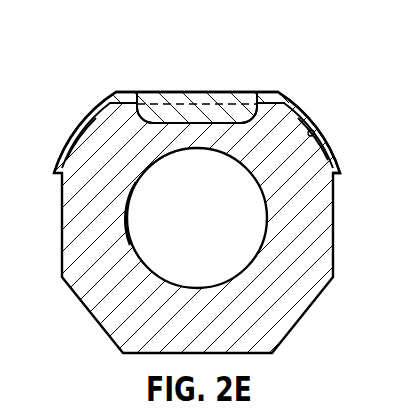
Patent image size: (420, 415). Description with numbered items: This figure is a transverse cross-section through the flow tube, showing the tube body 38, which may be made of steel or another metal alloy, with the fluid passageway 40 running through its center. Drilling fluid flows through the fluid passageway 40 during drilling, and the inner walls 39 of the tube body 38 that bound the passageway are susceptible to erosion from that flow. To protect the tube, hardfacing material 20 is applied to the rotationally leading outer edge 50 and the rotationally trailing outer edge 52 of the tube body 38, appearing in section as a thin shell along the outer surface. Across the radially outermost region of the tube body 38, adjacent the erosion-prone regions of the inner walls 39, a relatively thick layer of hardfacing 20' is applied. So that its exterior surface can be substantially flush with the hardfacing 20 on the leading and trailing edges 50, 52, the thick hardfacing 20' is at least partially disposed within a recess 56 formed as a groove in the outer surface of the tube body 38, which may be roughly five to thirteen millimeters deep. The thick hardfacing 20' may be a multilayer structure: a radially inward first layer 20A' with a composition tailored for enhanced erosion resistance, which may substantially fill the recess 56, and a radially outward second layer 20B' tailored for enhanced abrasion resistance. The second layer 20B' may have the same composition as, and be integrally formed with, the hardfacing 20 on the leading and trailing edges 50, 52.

The hardfacing material 20 is at (197, 113).
The relatively thick layer of hardfacing 20' is at (197, 67).
The radially inward first layer 20A' is at (241, 84).
The radially outward second layer 20B' is at (162, 87).
The recess 56 is at (215, 104).
The rotationally leading outer edge 50 is at (73, 134).
The rotationally trailing outer edge 52 is at (313, 135).
The tube body 38 is at (310, 237).
The inner walls 39 is at (143, 243).
The fluid passageway 40 is at (211, 226).